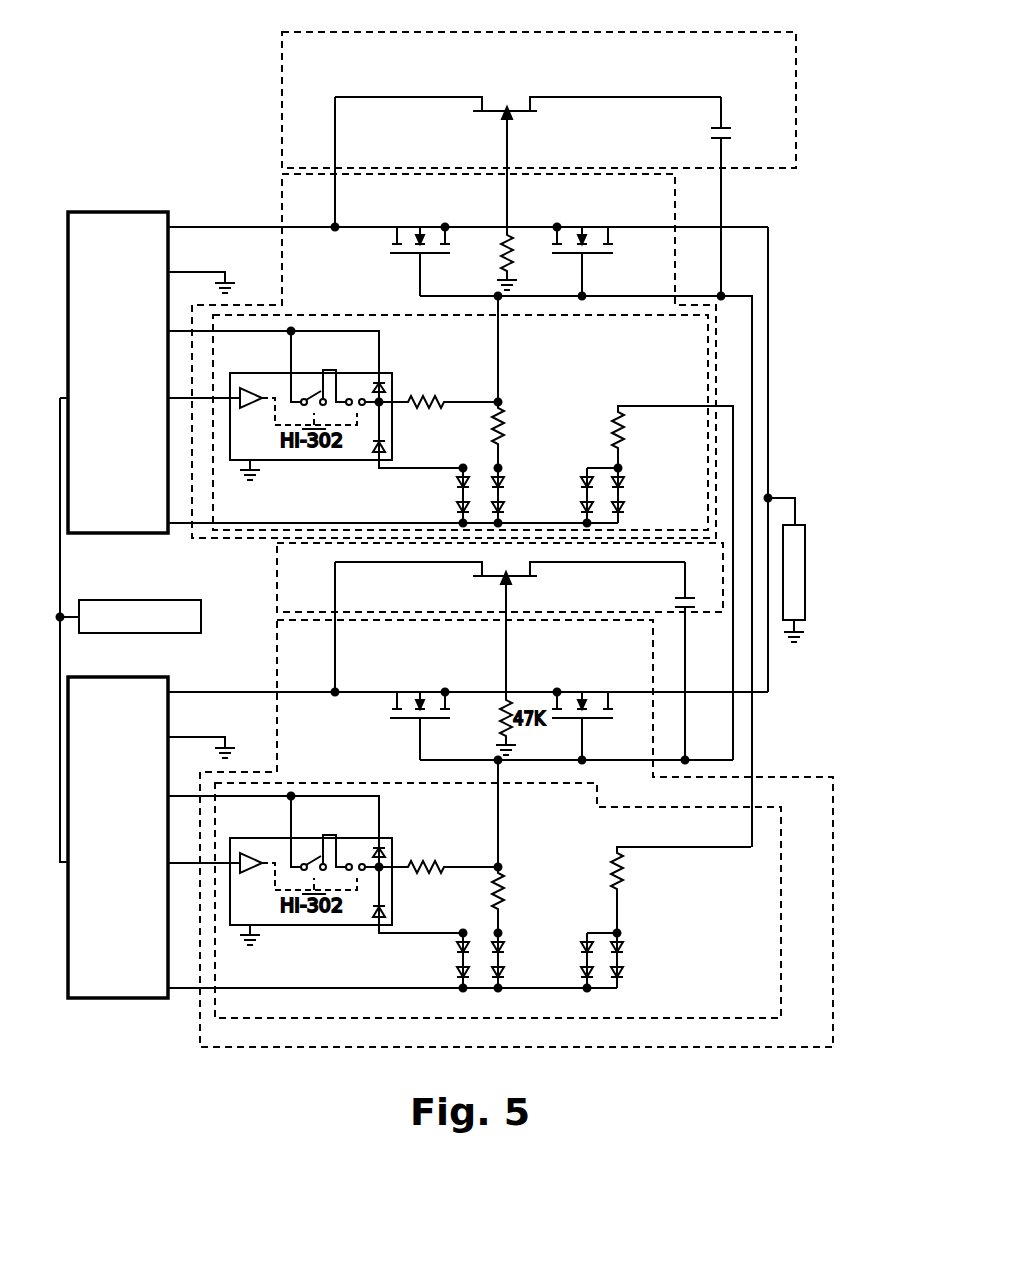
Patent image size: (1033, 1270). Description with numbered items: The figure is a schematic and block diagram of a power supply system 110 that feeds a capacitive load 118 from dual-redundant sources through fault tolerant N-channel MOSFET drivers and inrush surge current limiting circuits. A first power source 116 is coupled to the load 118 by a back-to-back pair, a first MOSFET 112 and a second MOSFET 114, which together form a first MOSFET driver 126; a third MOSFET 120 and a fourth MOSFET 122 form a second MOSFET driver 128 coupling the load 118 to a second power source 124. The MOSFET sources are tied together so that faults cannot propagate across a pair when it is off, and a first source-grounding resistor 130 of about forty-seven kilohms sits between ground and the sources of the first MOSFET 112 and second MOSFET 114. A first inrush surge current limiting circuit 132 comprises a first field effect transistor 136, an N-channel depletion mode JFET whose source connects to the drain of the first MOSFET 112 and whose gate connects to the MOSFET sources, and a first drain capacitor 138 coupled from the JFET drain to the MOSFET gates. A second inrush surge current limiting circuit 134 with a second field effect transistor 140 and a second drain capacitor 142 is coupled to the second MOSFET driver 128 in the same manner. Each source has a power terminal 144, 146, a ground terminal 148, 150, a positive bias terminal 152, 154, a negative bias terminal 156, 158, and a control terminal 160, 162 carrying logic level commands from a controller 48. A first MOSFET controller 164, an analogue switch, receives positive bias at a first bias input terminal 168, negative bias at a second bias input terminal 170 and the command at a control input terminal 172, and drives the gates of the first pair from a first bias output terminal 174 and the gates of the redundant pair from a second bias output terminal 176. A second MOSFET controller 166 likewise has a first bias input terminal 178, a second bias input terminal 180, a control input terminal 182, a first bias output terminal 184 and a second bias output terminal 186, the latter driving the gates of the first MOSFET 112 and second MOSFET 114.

The power supply system 110 is at (152, 170).
The first MOSFET 112 is at (422, 233).
The second MOSFET 114 is at (583, 233).
The first power source 116 is at (100, 542).
The load 118 is at (807, 540).
The third MOSFET 120 is at (422, 698).
The fourth MOSFET 122 is at (583, 698).
The second power source 124 is at (100, 1007).
The first MOSFET driver 126 is at (277, 202).
The second MOSFET driver 128 is at (273, 669).
The first source-grounding resistor 130 is at (497, 250).
The first inrush surge current limiting circuit 132 is at (279, 73).
The second inrush surge current limiting circuit 134 is at (273, 600).
The first field effect transistor 136 is at (495, 97).
The first drain capacitor 138 is at (725, 136).
The second field effect transistor 140 is at (478, 578).
The second drain capacitor 142 is at (681, 598).
The power terminal 144 is at (170, 226).
The power terminal 146 is at (170, 691).
The ground terminal 148 is at (172, 272).
The ground terminal 150 is at (172, 737).
The positive bias terminal 152 is at (170, 329).
The positive bias terminal 154 is at (170, 794).
The negative bias terminal 156 is at (172, 537).
The negative bias terminal 158 is at (172, 1002).
The control terminal 160 is at (170, 397).
The control terminal 162 is at (170, 862).
The first MOSFET controller 164 is at (358, 308).
The second MOSFET controller 166 is at (358, 775).
The first bias input terminal 168 is at (218, 333).
The second bias input terminal 170 is at (222, 522).
The control input terminal 172 is at (218, 400).
The first bias output terminal 174 is at (498, 330).
The second bias output terminal 176 is at (682, 406).
The first bias input terminal 178 is at (218, 798).
The second bias input terminal 180 is at (222, 987).
The control input terminal 182 is at (218, 865).
The first bias output terminal 184 is at (498, 795).
The second bias output terminal 186 is at (681, 847).
The controller 48 is at (143, 634).